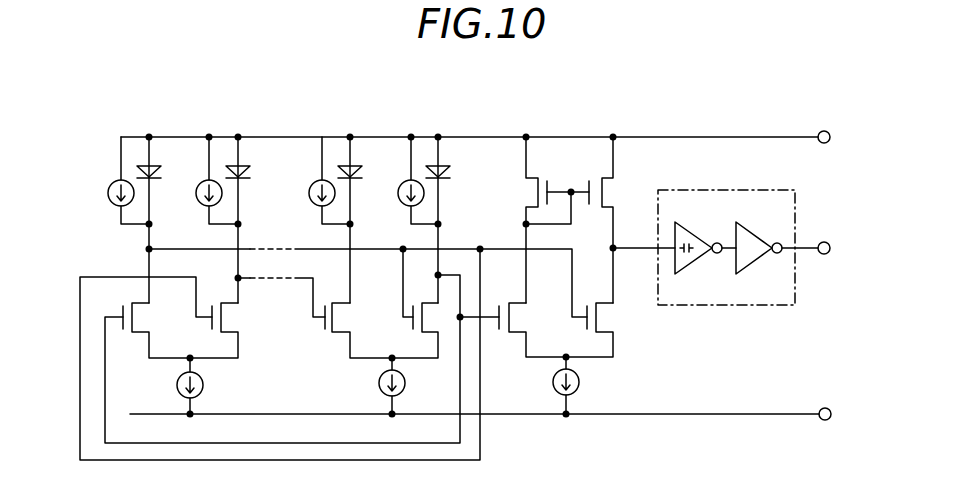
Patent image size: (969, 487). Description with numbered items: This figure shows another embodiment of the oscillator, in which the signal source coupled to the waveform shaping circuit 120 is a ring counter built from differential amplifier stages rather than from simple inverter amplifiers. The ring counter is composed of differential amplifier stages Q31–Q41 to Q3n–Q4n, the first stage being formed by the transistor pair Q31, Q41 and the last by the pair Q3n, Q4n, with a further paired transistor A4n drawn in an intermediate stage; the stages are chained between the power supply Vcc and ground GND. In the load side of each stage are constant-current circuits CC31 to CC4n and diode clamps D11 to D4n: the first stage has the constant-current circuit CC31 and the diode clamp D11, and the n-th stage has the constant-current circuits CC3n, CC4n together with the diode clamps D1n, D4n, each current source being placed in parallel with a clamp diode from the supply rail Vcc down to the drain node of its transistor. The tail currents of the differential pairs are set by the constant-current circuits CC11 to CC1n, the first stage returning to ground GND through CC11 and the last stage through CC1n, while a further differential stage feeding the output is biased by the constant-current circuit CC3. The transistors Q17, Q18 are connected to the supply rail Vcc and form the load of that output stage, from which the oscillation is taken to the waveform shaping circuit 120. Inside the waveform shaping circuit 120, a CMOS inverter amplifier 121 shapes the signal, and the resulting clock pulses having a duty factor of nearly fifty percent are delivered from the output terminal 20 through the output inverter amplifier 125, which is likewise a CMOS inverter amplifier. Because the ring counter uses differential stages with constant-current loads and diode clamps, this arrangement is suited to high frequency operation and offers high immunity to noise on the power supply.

The power supply Vcc is at (826, 130).
The ground GND is at (820, 407).
The constant-current circuit CC31 is at (112, 184).
The diode clamp D11 is at (146, 163).
The diode clamp D4n is at (234, 163).
The constant-current circuit CC3n is at (313, 184).
The diode clamp D1n is at (346, 162).
The constant-current circuit CC4n is at (402, 184).
The transistor Q17 is at (528, 203).
The transistor Q18 is at (602, 178).
The waveform shaping circuit 120 is at (727, 190).
The inverter amplifier 121 is at (698, 228).
The output inverter amplifier 125 is at (758, 228).
The output terminal 20 is at (824, 241).
The transistor of differential amplifier stage Q31 is at (140, 300).
The transistor of differential amplifier stage Q41 is at (221, 335).
The constant-current circuit CC11 is at (178, 384).
The transistor of differential amplifier stage Q3n is at (334, 334).
The transistor of differential amplifier stage A4n is at (424, 334).
The constant-current circuit CC1n is at (379, 384).
The transistor of differential amplifier stage Q4n is at (600, 305).
The constant-current circuit CC3 is at (582, 382).